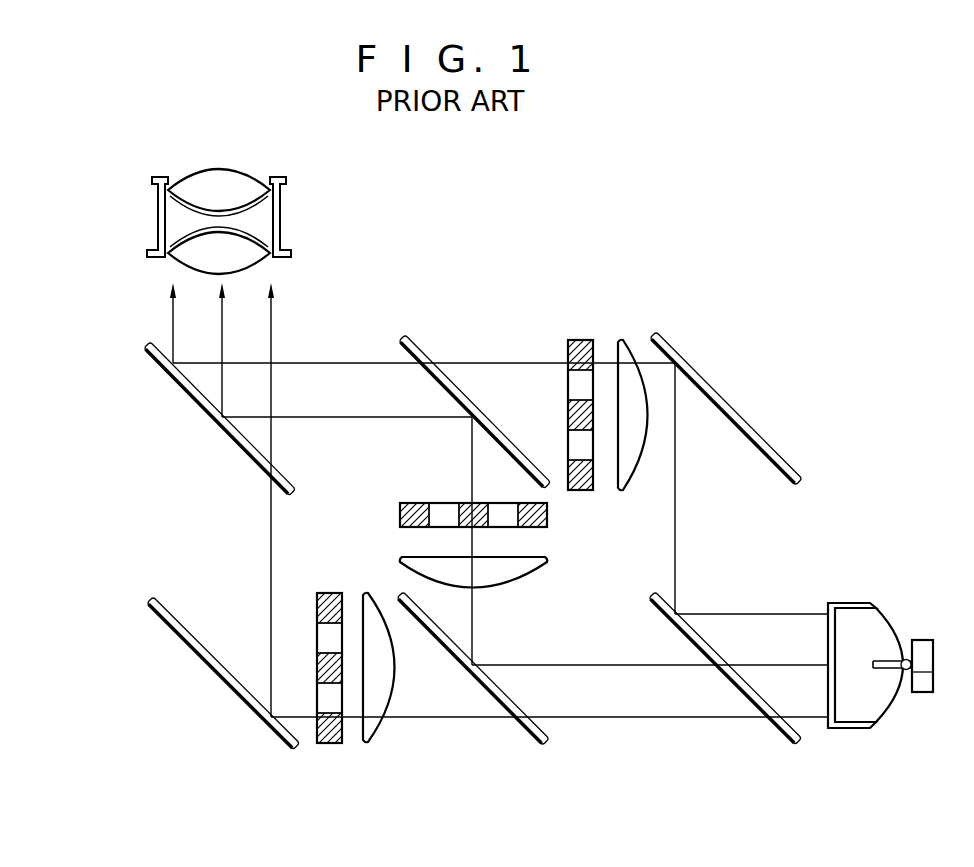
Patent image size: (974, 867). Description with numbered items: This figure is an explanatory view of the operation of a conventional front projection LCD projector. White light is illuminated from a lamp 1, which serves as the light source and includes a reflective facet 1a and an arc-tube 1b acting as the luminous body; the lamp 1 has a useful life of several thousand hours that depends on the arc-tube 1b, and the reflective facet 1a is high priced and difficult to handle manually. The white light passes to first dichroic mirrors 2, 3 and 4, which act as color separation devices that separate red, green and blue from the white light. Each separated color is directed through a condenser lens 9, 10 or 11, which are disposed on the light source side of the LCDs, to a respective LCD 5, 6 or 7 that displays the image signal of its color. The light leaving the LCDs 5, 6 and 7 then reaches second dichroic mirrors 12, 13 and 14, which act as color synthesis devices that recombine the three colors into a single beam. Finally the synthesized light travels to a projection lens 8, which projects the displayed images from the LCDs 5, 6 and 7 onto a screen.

The lamp 1 is at (893, 664).
The reflective facet 1a is at (852, 729).
The arc-tube 1b is at (893, 660).
The first dichroic mirror 2 is at (797, 746).
The first dichroic mirror 3 is at (672, 346).
The first dichroic mirror 4 is at (536, 744).
The LCD 5 is at (578, 342).
The LCD 6 is at (406, 502).
The LCD 7 is at (327, 743).
The projection lens 8 is at (240, 181).
The condenser lens 9 is at (622, 343).
The condenser lens 10 is at (532, 567).
The condenser lens 11 is at (373, 743).
The second dichroic mirror 12 is at (410, 341).
The second dichroic mirror 13 is at (150, 350).
The second dichroic mirror 14 is at (160, 603).